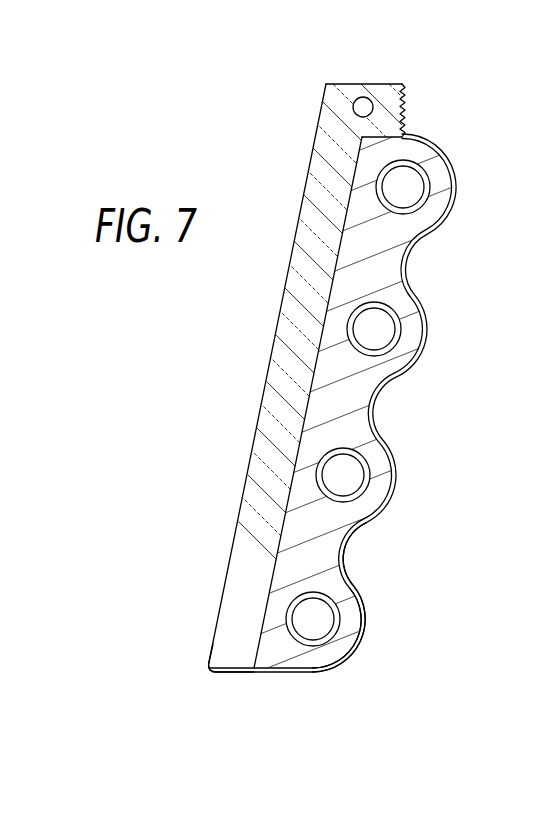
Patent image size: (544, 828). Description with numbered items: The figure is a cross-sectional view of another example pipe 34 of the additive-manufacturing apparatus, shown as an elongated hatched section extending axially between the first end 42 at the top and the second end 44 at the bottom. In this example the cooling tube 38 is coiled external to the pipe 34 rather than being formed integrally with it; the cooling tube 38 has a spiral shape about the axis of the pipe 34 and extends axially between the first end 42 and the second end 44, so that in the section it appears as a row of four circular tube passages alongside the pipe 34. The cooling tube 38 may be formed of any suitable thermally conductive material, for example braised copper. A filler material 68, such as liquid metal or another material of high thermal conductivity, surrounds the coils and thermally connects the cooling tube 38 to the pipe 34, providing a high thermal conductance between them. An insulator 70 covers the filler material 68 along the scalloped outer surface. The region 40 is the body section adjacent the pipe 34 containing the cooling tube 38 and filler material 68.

The pipe 34 is at (236, 528).
The cooling tube 38 is at (340, 623).
The mounting body 40 is at (283, 365).
The first end 42 is at (337, 84).
The second end 44 is at (218, 672).
The filler material 68 is at (343, 658).
The insulator 70 is at (362, 640).